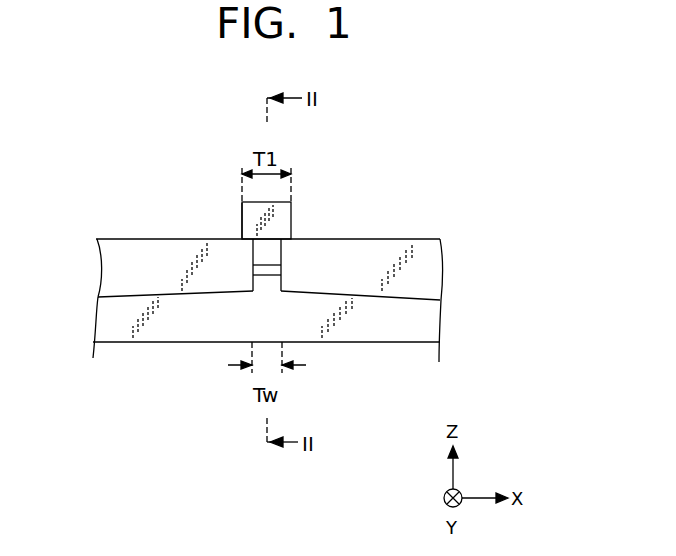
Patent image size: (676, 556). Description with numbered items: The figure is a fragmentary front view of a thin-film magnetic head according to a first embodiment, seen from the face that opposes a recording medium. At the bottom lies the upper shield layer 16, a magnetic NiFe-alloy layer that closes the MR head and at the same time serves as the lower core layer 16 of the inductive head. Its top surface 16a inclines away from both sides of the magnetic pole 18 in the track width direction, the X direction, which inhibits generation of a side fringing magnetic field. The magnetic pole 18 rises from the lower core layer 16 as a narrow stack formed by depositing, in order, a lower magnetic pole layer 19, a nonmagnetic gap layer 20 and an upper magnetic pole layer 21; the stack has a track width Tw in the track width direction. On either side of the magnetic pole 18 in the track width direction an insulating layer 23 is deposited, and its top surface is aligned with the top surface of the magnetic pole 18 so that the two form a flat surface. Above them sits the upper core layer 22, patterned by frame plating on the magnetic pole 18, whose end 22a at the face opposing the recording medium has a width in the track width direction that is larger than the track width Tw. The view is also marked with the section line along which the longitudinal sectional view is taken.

The upper shield layer 16 is at (417, 326).
The top surface 16a is at (131, 296).
The magnetic pole 18 is at (437, 195).
The lower magnetic pole layer 19 is at (272, 285).
The nonmagnetic gap layer 20 is at (272, 270).
The upper magnetic pole layer 21 is at (272, 253).
The upper core layer 22 is at (242, 206).
The end 22a is at (242, 226).
The insulating layer 23 is at (120, 256).